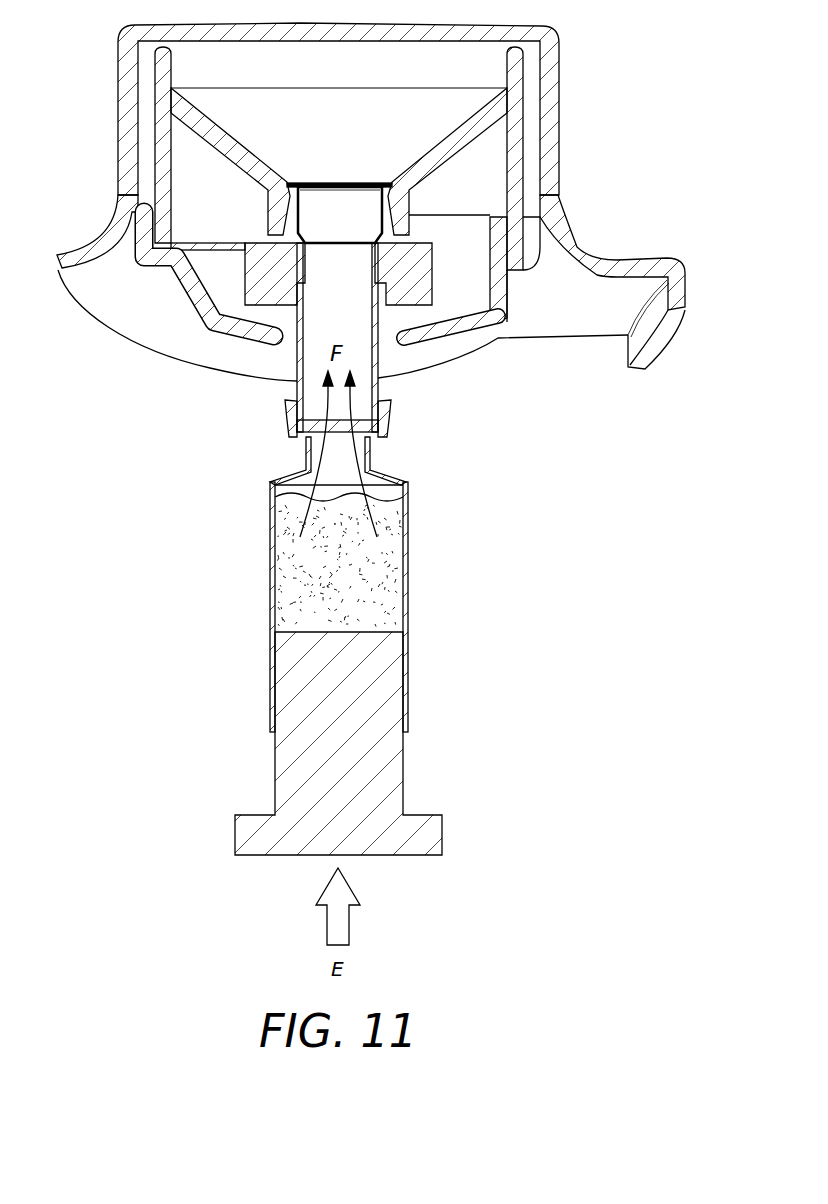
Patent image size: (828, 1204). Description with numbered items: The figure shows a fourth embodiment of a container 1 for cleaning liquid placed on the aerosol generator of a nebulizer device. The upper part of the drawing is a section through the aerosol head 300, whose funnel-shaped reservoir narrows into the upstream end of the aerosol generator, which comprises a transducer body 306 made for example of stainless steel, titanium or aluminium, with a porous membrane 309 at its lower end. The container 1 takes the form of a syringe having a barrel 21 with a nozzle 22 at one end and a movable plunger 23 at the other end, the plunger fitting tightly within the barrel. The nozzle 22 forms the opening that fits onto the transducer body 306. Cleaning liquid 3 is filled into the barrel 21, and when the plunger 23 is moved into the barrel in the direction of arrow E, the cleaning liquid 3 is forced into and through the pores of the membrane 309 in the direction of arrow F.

The aerosol head 300 is at (562, 80).
The transducer body 306 is at (297, 388).
The membrane 309 is at (385, 429).
The nozzle 22 is at (306, 455).
The container 1 is at (410, 495).
The barrel 21 is at (270, 517).
The cleaning liquid 3 is at (403, 616).
The plunger 23 is at (275, 766).